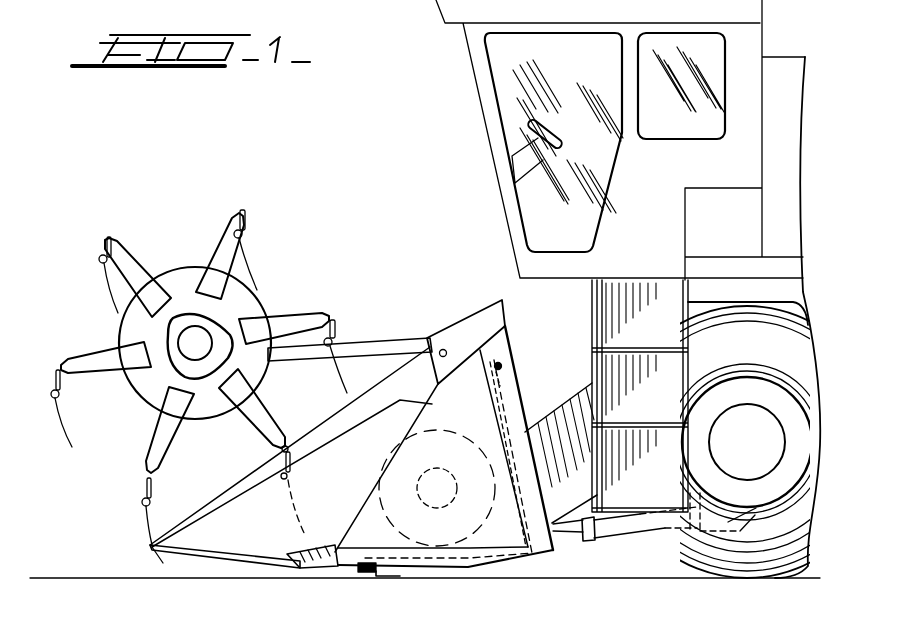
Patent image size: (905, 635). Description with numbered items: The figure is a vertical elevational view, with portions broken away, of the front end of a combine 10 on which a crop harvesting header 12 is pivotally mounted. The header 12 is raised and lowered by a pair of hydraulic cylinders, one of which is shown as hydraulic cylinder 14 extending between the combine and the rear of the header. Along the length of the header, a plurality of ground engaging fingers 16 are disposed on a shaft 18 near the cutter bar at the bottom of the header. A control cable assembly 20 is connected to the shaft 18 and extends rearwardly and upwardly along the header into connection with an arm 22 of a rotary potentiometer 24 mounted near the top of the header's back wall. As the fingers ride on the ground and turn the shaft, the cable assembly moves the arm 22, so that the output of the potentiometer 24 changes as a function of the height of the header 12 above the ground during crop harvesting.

The combine 10 is at (458, 115).
The crop harvesting header 12 is at (379, 333).
The hydraulic cylinder 14 is at (603, 528).
The ground engaging fingers 16 is at (378, 577).
The shaft 18 is at (366, 574).
The control cable assembly 20 is at (510, 470).
The arm 22 is at (498, 382).
The rotary potentiometer 24 is at (500, 364).